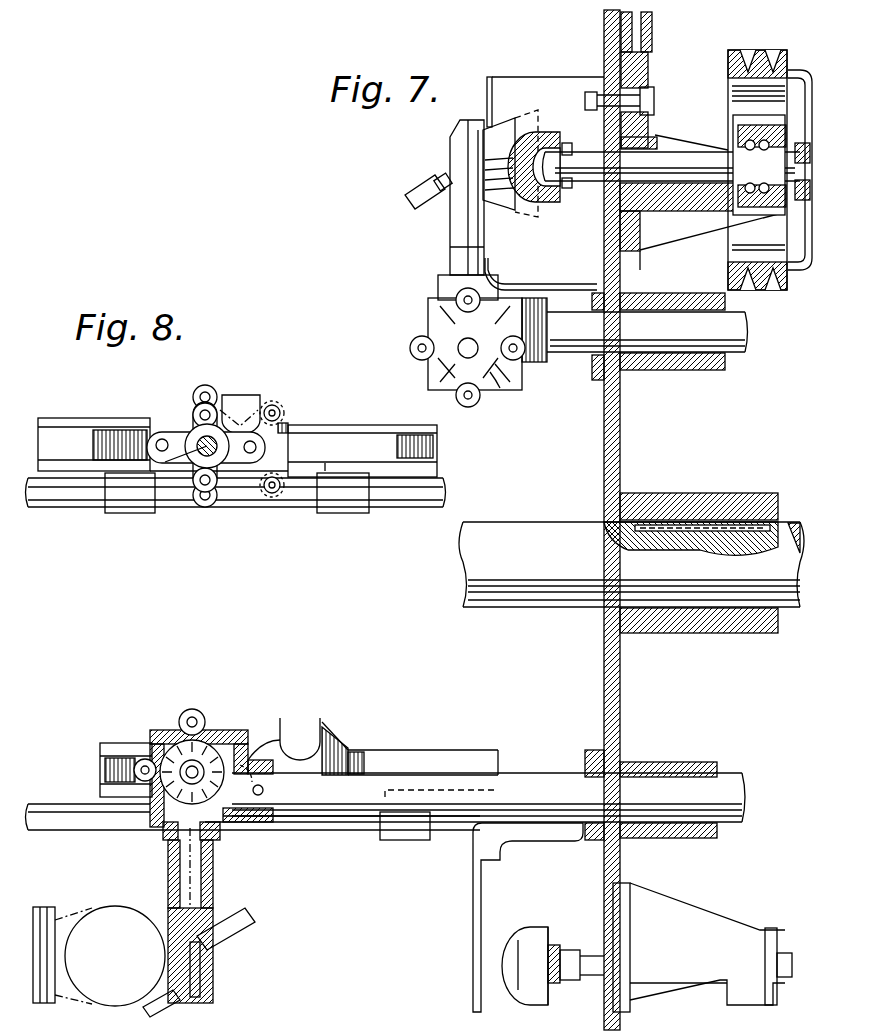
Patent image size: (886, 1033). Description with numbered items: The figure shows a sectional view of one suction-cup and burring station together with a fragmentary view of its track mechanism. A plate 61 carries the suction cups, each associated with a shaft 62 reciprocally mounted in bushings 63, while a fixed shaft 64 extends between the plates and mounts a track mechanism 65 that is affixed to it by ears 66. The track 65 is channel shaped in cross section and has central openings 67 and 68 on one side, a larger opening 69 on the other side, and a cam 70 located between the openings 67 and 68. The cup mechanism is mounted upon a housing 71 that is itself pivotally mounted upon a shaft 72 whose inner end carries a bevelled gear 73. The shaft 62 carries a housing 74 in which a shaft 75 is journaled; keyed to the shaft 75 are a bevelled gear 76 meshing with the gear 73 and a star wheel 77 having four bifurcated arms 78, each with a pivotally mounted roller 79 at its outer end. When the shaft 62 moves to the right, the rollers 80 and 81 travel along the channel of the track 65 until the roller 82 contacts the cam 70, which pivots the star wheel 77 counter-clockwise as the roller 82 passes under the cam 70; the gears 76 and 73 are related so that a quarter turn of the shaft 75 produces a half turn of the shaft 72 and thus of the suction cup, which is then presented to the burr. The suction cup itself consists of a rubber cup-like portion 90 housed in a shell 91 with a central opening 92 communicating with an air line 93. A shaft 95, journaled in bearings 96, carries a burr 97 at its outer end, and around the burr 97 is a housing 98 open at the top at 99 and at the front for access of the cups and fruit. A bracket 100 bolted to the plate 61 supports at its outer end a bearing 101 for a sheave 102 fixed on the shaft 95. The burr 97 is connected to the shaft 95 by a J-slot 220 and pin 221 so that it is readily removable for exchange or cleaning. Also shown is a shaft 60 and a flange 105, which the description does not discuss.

In FIG. 7, the main shaft 60 is at (531, 597).
In FIG. 7, the plate 61 is at (620, 437).
In FIG. 7, the shaft 62 is at (740, 350).
In FIG. 7, the bushing 63 is at (683, 370).
In FIG. 7, the shaft 64 is at (305, 832).
In FIG. 8, the shaft 64 is at (405, 508).
In FIG. 7, the track mechanism 65 is at (345, 750).
In FIG. 8, the track mechanism 65 is at (348, 425).
In FIG. 7, the ear 66 is at (405, 840).
In FIG. 8, the ear 66 is at (125, 513).
In FIG. 7, the opening 67 is at (345, 778).
In FIG. 8, the opening 67 is at (288, 425).
In FIG. 7, the opening 68 is at (260, 745).
In FIG. 7, the larger opening 69 is at (378, 795).
In FIG. 8, the larger opening 69 is at (320, 463).
In FIG. 7, the cam 70 is at (305, 722).
In FIG. 8, the cam 70 is at (245, 395).
In FIG. 7, the housing 71 is at (450, 218).
In FIG. 7, the shaft 72 is at (205, 858).
In FIG. 7, the bevelled gear 73 is at (165, 835).
In FIG. 7, the housing 74 is at (428, 302).
In FIG. 7, the shaft 75 is at (478, 342).
In FIG. 8, the shaft 75 is at (190, 462).
In FIG. 7, the bevelled gear 76 is at (160, 740).
In FIG. 7, the star wheel 77 is at (497, 383).
In FIG. 8, the star wheel 77 is at (165, 462).
In FIG. 7, the bifurcated arm 78 is at (440, 320).
In FIG. 8, the bifurcated arm 78 is at (215, 408).
In FIG. 7, the roller 79 is at (410, 347).
In FIG. 7, the roller 80 is at (100, 772).
In FIG. 8, the roller 80 is at (145, 435).
In FIG. 7, the roller 81 is at (255, 780).
In FIG. 8, the roller 81 is at (280, 405).
In FIG. 7, the roller 82 is at (200, 712).
In FIG. 8, the roller 82 is at (210, 385).
In FIG. 7, the rubber cup-like portion 90 is at (527, 112).
In FIG. 7, the shell 91 is at (500, 128).
In FIG. 7, the central opening 92 is at (200, 967).
In FIG. 7, the air line 93 is at (435, 178).
In FIG. 7, the shaft 95 is at (692, 170).
In FIG. 7, the bearing 96 is at (655, 147).
In FIG. 7, the burr 97 is at (552, 135).
In FIG. 7, the housing 98 is at (569, 78).
In FIG. 7, the top opening 99 is at (489, 80).
In FIG. 7, the bracket 100 is at (647, 205).
In FIG. 7, the bearing 101 is at (760, 120).
In FIG. 7, the sheave 102 is at (760, 50).
In FIG. 7, the flange 105 is at (652, 20).
In FIG. 7, the J-slot 220 is at (555, 945).
In FIG. 7, the pin 221 is at (567, 143).